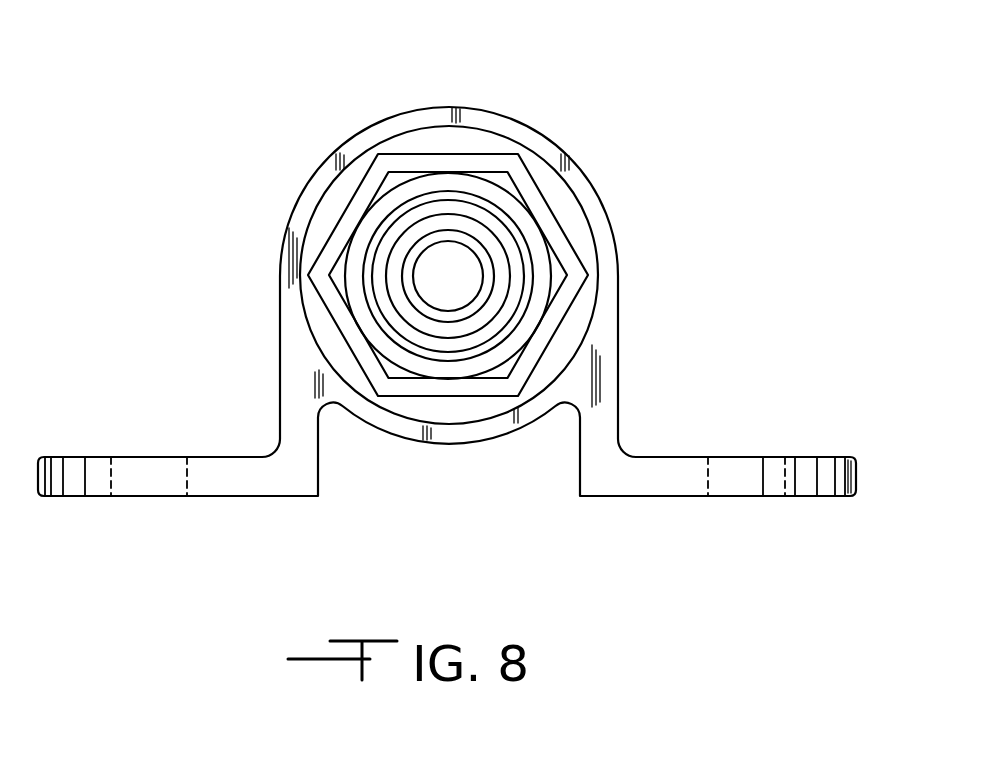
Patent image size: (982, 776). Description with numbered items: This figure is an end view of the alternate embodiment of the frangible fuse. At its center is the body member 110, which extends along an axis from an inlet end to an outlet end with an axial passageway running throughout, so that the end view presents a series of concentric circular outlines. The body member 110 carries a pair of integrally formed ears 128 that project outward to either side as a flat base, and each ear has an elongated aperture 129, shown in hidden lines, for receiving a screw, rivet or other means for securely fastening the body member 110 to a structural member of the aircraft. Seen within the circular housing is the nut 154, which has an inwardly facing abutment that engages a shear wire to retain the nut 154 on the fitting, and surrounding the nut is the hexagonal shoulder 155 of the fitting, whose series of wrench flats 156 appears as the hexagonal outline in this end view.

The body member 110 is at (537, 129).
The ears 128 is at (807, 455).
The elongated aperture 129 is at (113, 473).
The nut 154 is at (553, 275).
The hexagonal shoulder 155 is at (383, 165).
The wrench flats 156 is at (397, 155).